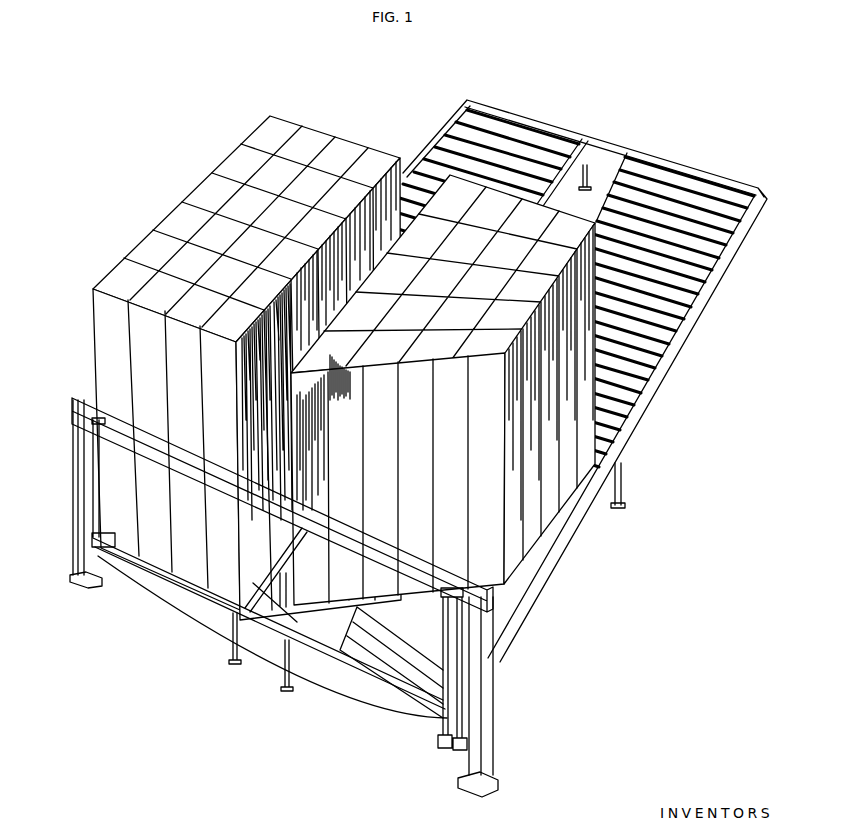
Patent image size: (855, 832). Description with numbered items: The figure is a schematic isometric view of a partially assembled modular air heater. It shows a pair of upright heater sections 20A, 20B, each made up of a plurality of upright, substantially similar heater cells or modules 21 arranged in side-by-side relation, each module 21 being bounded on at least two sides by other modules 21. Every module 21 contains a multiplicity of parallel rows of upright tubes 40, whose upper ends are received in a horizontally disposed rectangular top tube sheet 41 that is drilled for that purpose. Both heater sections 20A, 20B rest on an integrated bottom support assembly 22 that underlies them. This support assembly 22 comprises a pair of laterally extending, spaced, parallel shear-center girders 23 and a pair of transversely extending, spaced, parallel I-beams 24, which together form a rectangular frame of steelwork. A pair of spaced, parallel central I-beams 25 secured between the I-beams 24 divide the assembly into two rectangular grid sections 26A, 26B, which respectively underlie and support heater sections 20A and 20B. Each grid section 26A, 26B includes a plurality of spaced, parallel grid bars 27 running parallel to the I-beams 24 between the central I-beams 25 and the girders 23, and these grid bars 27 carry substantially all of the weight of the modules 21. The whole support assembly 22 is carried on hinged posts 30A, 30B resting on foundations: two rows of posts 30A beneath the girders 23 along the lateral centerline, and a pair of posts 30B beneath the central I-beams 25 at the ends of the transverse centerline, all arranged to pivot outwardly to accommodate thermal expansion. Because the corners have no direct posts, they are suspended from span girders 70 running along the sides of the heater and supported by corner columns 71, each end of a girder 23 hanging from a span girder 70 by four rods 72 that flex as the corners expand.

The heater section 20A is at (179, 191).
The heater section 20B is at (543, 512).
The heater cell or module 21 is at (187, 557).
The bottom support assembly 22 is at (569, 127).
The shear-center girder 23 is at (447, 122).
The I-beam 24 is at (707, 173).
The central I-beam 25 is at (262, 597).
The grid section 26A is at (494, 137).
The grid section 26B is at (658, 186).
The grid bar 27 is at (663, 327).
The hinged post 30A is at (583, 188).
The hinged post 30B is at (622, 483).
The upright tube 40 is at (299, 550).
The top tube sheet 41 is at (123, 272).
The span girder 70 is at (220, 472).
The corner column 71 is at (78, 503).
The rod 72 is at (93, 490).